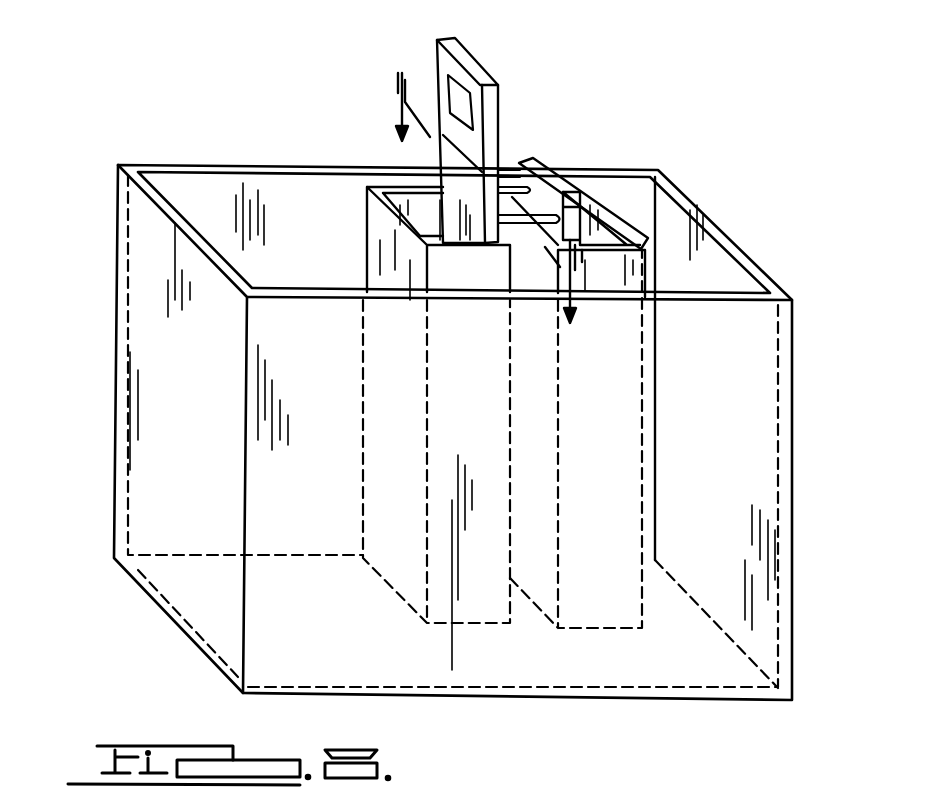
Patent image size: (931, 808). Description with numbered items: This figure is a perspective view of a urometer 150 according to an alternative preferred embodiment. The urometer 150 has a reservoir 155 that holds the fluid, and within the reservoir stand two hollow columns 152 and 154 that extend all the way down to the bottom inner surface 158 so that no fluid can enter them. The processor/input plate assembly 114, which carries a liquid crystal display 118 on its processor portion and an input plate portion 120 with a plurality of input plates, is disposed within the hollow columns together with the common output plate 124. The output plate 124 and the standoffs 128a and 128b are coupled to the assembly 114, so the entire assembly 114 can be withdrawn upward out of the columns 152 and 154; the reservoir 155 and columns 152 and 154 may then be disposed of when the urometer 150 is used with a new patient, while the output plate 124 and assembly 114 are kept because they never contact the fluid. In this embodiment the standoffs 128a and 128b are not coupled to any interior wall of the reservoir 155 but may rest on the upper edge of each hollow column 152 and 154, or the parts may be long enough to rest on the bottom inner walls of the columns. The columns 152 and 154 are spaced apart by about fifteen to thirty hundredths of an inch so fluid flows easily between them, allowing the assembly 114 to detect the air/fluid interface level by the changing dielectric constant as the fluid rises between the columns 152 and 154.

The processor/input plate circuit board assembly 114 is at (498, 84).
The liquid crystal display 118 is at (452, 90).
The input plate portion 120 is at (452, 163).
The common output plate 124 is at (540, 173).
The standoff 128a is at (565, 222).
The standoff 128b is at (510, 185).
The urometer 150 is at (176, 97).
The hollow column 152 is at (366, 230).
The hollow column 154 is at (608, 208).
The reservoir 155 is at (100, 262).
The bottom inner surface 158 is at (215, 610).